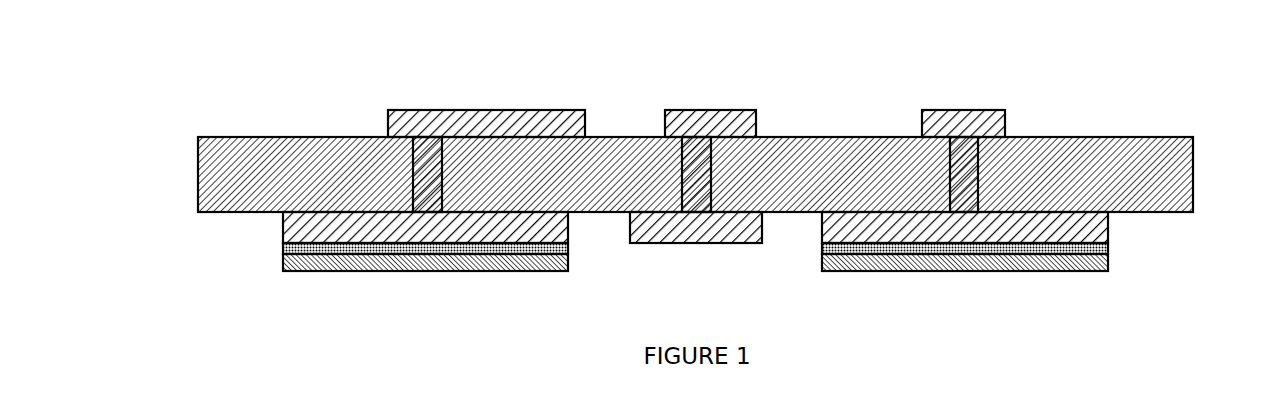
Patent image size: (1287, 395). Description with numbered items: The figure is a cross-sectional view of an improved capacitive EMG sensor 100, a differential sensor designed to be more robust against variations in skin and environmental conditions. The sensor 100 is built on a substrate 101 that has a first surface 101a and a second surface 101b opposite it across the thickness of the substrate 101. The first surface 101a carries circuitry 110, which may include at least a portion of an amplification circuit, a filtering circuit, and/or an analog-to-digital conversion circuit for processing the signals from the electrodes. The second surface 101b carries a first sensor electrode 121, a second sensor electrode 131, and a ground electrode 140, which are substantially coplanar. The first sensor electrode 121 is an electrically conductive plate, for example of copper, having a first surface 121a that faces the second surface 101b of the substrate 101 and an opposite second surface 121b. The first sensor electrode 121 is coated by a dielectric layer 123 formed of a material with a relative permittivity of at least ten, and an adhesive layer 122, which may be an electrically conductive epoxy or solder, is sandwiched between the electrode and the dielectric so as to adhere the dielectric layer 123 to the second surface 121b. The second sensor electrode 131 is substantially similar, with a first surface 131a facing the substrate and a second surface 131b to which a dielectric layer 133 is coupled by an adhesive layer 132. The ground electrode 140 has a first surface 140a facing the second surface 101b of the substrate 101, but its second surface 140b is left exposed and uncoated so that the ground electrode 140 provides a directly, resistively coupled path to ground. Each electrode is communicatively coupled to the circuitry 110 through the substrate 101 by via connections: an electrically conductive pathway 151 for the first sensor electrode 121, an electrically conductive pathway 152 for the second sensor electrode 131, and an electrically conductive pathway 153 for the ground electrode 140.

The capacitive EMG sensor 100 is at (194, 105).
The substrate 101 is at (695, 174).
The first surface of substrate 101a is at (1163, 137).
The second surface of substrate 101b is at (1172, 213).
The circuitry 110 is at (378, 93).
The first sensor electrode 121 is at (425, 227).
The first surface of first sensor electrode 121a is at (315, 211).
The second surface of first sensor electrode 121b is at (295, 241).
The adhesive layer 122 is at (572, 248).
The dielectric layer 123 is at (292, 262).
The second sensor electrode 131 is at (965, 227).
The first surface of second sensor electrode 131a is at (1072, 210).
The second surface of second sensor electrode 131b is at (1092, 243).
The adhesive layer 132 is at (824, 248).
The dielectric layer 133 is at (1097, 262).
The ground electrode 140 is at (696, 227).
The first surface of ground electrode 140a is at (637, 206).
The second surface of ground electrode 140b is at (662, 245).
The electrically conductive pathway 151 is at (423, 183).
The electrically conductive pathway 152 is at (965, 183).
The electrically conductive pathway 153 is at (695, 187).